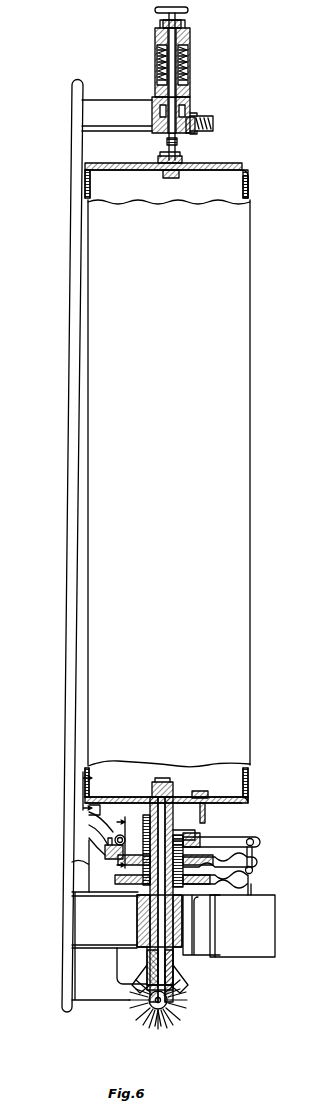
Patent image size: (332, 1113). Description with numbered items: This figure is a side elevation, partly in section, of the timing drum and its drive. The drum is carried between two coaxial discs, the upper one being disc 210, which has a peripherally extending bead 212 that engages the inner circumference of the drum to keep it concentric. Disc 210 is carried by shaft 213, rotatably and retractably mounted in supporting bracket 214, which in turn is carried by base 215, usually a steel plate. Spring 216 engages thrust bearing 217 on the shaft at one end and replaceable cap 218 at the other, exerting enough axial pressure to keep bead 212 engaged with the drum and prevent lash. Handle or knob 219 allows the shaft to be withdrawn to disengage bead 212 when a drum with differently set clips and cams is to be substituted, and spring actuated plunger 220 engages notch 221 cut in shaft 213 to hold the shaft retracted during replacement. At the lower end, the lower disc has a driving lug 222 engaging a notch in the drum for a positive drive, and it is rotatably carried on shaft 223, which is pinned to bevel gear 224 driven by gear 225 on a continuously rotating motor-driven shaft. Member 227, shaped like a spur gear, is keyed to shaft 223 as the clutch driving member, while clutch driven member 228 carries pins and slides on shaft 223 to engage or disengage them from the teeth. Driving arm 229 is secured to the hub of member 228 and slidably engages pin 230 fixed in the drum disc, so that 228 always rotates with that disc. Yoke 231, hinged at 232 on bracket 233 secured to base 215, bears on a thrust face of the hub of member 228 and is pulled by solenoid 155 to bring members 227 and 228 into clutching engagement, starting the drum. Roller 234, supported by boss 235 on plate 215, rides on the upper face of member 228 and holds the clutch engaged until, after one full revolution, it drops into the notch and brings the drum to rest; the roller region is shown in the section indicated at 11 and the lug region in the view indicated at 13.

The section line 11- 11 is at (112, 843).
The view line 13- 13 is at (96, 792).
The solenoid 155 is at (276, 905).
The disc 210 is at (222, 168).
The bead 212 is at (246, 180).
The shaft 213 is at (190, 98).
The supporting bracket 214 is at (199, 118).
The base 215 is at (73, 110).
The spring 216 is at (188, 61).
The thrust bearing 217 is at (186, 80).
The replaceable cap 218 is at (190, 44).
The handle or knob 219 is at (158, 11).
The spring actuated plunger 220 is at (186, 134).
The notch 221 is at (166, 142).
The driving lug 222 is at (83, 796).
The shaft 223 is at (180, 832).
The bevel gear 224 is at (186, 980).
The gear 225 is at (140, 1012).
The clutch driving member 227 is at (254, 879).
The clutch driven member 228 is at (254, 860).
The driving arm 229 is at (206, 814).
The pin 230 is at (200, 798).
The yoke 231 is at (255, 842).
The hinge 232 is at (104, 836).
The bracket 233 is at (84, 814).
The roller 234 is at (104, 852).
The boss 235 is at (78, 864).